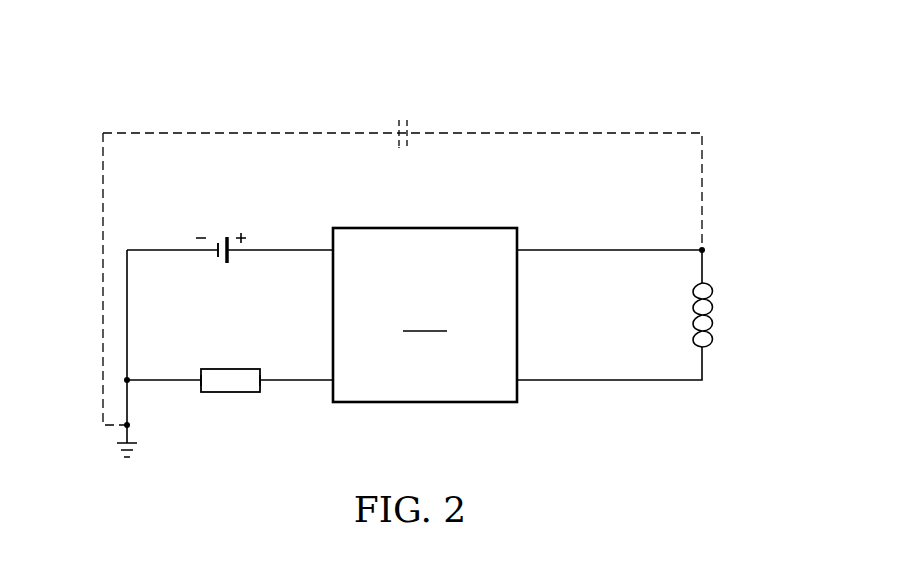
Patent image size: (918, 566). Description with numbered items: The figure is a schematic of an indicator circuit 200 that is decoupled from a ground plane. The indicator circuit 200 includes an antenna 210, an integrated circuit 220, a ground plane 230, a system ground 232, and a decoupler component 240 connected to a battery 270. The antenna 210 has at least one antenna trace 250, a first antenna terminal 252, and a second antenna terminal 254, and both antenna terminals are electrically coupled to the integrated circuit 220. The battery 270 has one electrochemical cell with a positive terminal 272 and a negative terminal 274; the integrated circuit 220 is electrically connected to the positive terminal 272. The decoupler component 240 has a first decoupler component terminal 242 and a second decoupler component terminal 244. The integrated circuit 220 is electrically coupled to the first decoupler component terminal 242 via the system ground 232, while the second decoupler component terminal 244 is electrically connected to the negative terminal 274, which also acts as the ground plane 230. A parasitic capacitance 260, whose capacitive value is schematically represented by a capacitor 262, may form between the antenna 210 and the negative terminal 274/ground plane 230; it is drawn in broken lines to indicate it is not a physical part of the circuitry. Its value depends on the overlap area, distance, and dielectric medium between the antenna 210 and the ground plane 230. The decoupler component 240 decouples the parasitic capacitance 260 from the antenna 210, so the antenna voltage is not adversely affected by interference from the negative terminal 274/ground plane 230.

The indicator circuit 200 is at (682, 87).
The antenna 210 is at (737, 307).
The integrated circuit 220 is at (425, 315).
The ground plane 230 is at (117, 451).
The system ground 232 is at (292, 375).
The decoupler component 240 is at (232, 394).
The first decoupler component terminal 242 is at (263, 386).
The second decoupler component terminal 244 is at (197, 384).
The antenna trace 250 is at (610, 382).
The first antenna terminal 252 is at (519, 245).
The second antenna terminal 254 is at (520, 384).
The parasitic capacitance 260 is at (403, 114).
The capacitor 262 is at (403, 150).
The battery 270 is at (225, 221).
The positive terminal 272 is at (229, 259).
The negative terminal 274 is at (216, 259).